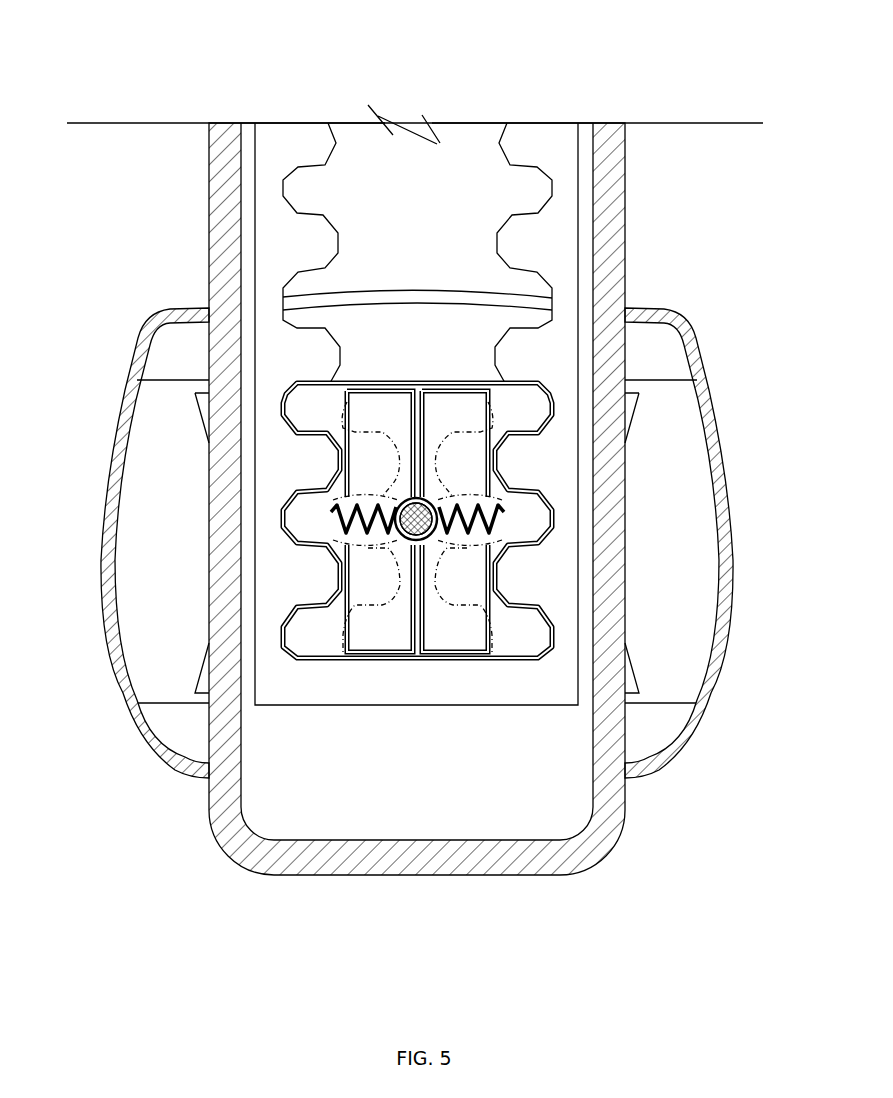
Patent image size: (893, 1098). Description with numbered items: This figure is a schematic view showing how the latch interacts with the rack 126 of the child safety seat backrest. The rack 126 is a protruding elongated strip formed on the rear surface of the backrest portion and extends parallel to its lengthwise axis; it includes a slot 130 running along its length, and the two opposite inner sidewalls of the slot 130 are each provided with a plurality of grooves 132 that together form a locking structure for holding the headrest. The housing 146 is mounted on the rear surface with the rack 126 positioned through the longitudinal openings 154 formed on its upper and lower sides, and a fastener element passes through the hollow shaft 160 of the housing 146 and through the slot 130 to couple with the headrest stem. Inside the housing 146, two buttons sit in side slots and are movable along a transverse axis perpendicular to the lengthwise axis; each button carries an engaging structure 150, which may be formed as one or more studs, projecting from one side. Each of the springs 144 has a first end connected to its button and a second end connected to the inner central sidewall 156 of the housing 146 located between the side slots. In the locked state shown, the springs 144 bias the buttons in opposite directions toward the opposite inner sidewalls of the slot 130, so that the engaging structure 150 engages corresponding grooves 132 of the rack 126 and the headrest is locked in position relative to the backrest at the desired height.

The rack 126 is at (592, 182).
The slot 130 is at (417, 147).
The grooves 132 is at (283, 628).
The springs 144 is at (356, 545).
The housing 146 is at (675, 350).
The engaging structure 150 is at (300, 396).
The longitudinal openings 154 is at (200, 298).
The inner central sidewall 156 is at (408, 550).
The hollow shaft 160 is at (393, 545).